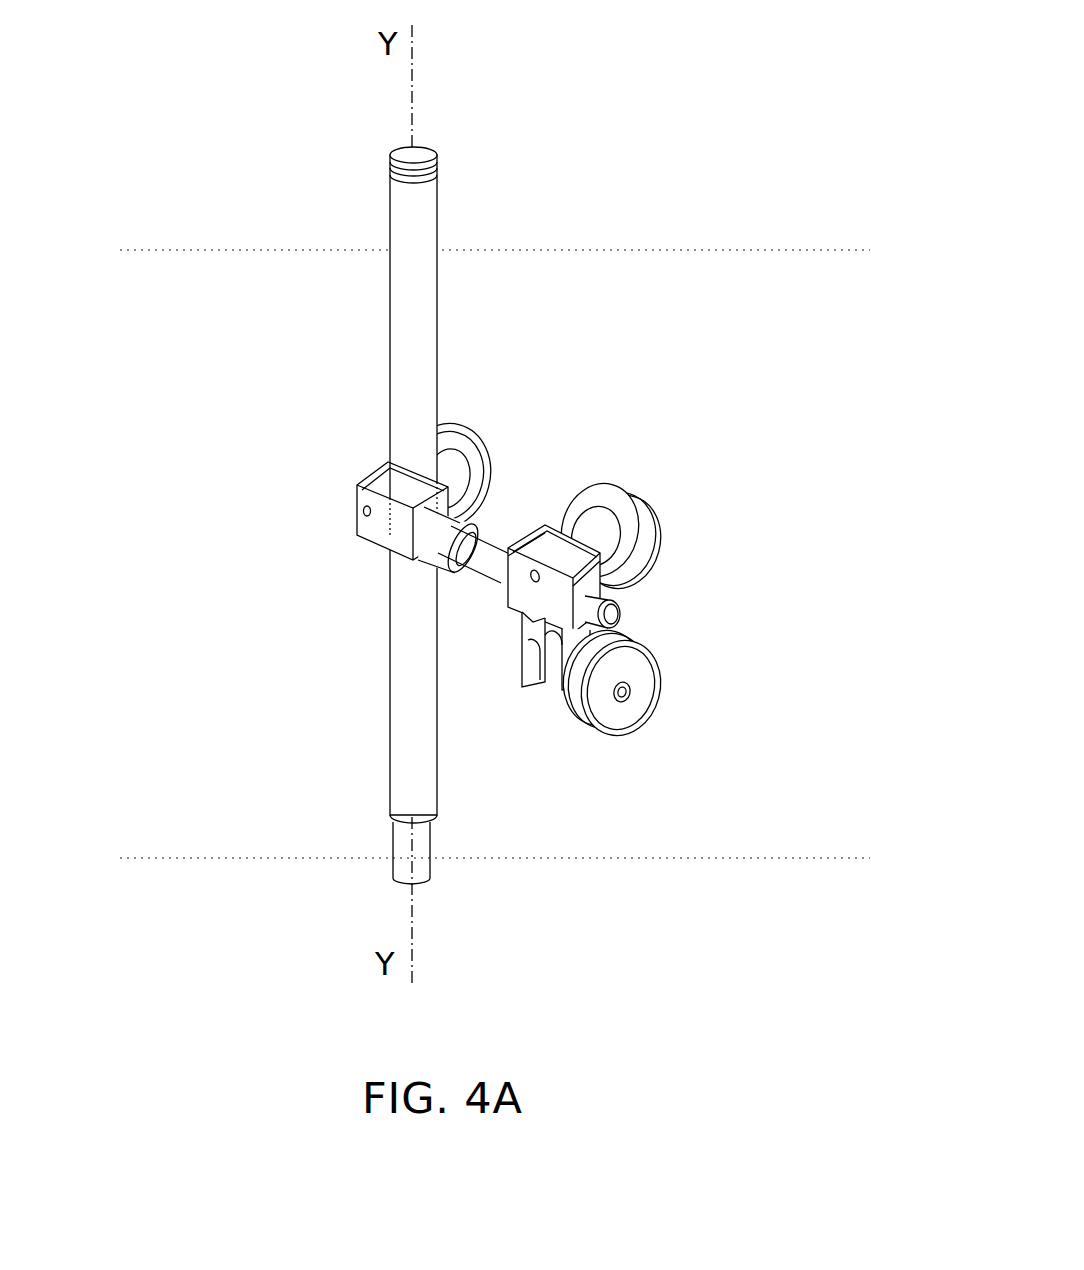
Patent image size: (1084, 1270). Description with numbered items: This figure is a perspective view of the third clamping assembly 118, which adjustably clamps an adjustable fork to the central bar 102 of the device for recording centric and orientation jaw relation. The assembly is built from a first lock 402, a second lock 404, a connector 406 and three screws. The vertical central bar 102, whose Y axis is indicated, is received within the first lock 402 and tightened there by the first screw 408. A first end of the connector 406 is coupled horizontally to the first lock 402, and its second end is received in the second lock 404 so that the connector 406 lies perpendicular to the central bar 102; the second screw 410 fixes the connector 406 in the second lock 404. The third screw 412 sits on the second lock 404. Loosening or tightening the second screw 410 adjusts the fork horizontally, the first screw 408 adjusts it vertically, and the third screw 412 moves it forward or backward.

The central bar 102 is at (408, 335).
The third clamping assembly 118 is at (536, 825).
The first lock 402 is at (355, 508).
The second lock 404 is at (528, 583).
The connector 406 is at (483, 550).
The first screw 408 is at (460, 430).
The second screw 410 is at (665, 528).
The third screw 412 is at (657, 690).